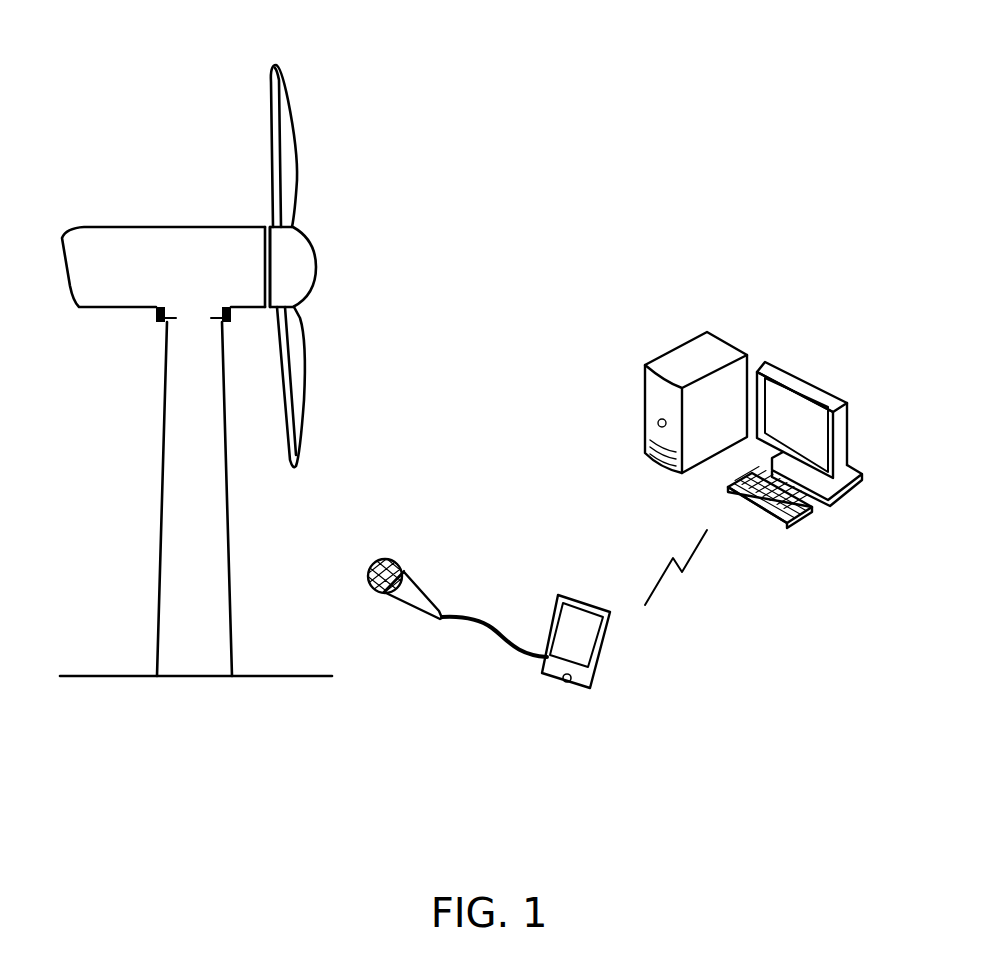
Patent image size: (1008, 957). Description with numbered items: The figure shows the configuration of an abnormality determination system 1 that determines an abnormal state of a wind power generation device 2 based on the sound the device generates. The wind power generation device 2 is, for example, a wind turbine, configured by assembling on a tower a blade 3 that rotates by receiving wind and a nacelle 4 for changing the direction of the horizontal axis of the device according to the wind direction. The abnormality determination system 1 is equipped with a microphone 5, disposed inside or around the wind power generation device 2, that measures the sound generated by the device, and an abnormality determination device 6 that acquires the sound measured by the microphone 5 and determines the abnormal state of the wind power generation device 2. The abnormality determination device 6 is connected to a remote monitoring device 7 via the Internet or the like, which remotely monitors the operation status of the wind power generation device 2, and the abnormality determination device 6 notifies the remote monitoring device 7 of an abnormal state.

The abnormality determination system 1 is at (537, 530).
The wind power generation device 2 is at (393, 74).
The blade 3 is at (288, 122).
The nacelle 4 is at (172, 227).
The microphone 5 is at (417, 612).
The abnormality determination device 6 is at (580, 690).
The remote monitoring device 7 is at (728, 342).